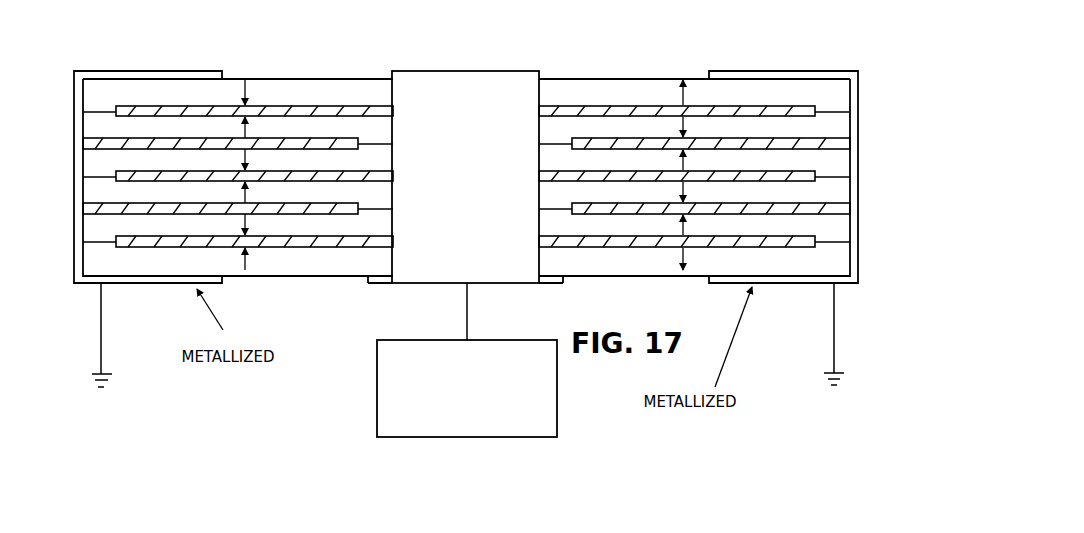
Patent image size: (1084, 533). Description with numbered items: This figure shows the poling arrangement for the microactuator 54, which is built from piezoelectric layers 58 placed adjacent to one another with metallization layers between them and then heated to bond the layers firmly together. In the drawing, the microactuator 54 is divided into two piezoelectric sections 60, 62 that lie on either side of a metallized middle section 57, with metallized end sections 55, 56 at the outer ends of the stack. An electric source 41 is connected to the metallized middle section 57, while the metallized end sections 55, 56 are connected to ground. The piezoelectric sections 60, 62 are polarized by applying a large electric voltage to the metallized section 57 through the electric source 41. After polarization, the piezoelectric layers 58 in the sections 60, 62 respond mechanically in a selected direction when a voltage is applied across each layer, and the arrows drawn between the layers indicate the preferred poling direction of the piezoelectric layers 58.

The electric source 41 is at (377, 387).
The microactuator 54 is at (233, 194).
The metallized end section 55 is at (138, 285).
The metallized end section 56 is at (807, 283).
The metallized middle section 57 is at (465, 70).
The piezoelectric layers 58 is at (820, 88).
The piezoelectric section 60 is at (315, 66).
The piezoelectric section 62 is at (645, 69).